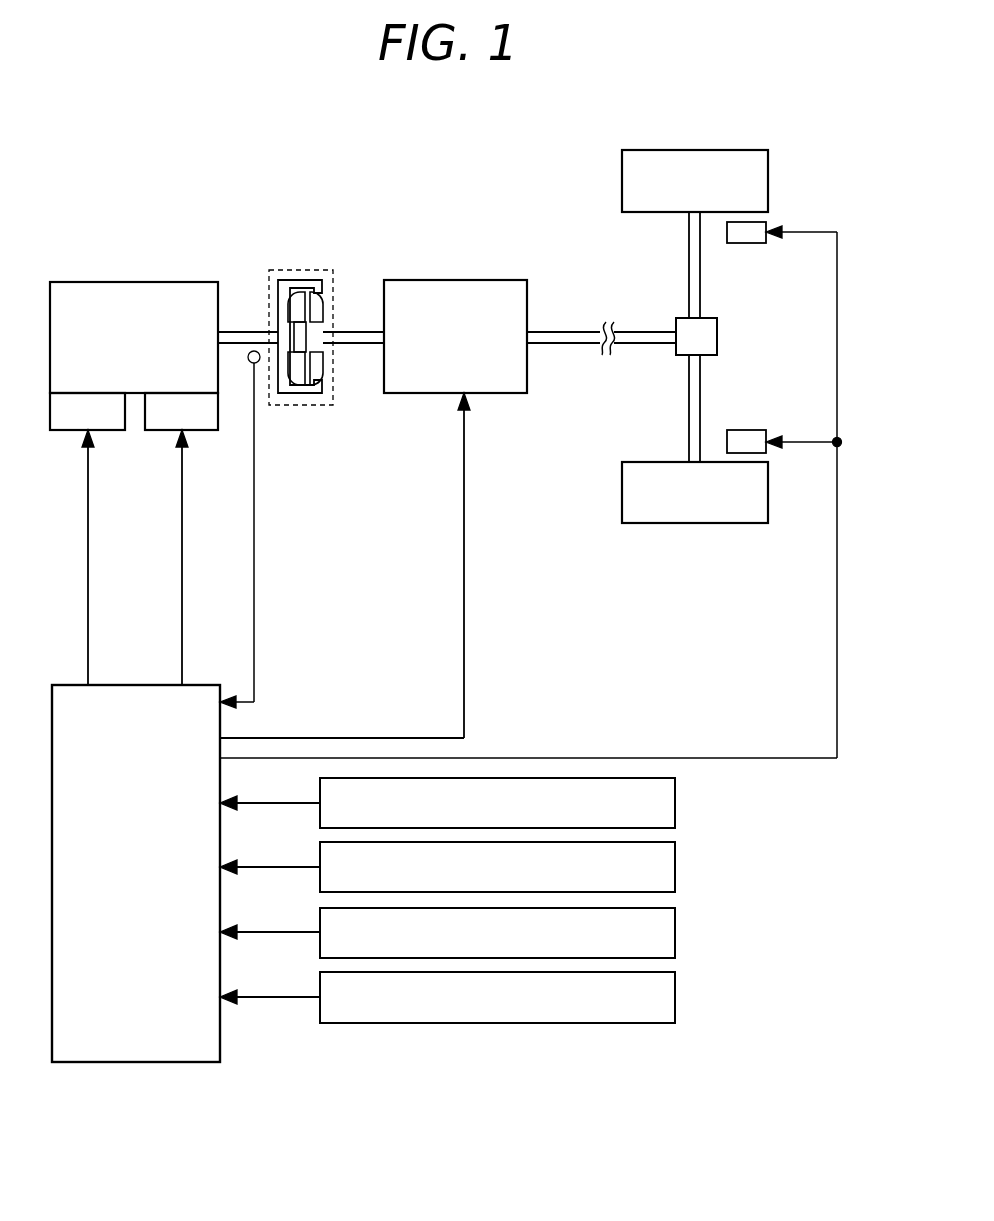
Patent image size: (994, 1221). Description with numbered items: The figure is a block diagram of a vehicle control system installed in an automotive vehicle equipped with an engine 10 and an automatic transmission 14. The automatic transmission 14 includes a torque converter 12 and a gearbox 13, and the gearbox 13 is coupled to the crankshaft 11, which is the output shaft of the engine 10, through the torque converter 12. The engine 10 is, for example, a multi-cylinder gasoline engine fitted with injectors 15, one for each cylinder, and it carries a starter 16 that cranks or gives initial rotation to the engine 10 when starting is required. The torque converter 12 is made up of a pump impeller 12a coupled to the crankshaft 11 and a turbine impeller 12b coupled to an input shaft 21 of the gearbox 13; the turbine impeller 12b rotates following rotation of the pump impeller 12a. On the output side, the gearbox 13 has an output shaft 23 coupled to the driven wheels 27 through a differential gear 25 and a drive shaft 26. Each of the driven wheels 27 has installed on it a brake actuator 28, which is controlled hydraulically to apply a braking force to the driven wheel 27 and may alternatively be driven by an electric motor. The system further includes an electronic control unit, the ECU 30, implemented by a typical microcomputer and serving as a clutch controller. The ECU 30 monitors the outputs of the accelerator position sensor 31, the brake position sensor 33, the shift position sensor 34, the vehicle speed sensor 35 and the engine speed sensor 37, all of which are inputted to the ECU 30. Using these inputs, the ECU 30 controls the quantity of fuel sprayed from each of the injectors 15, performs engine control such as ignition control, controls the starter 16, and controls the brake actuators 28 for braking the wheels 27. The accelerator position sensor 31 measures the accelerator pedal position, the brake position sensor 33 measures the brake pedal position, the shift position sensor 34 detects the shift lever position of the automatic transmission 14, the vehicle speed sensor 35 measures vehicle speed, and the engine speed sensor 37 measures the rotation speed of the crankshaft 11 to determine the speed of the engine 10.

The engine 10 is at (208, 278).
The crankshaft 11 is at (243, 330).
The torque converter 12 is at (308, 344).
The pump impeller 12a is at (322, 387).
The turbine impeller 12b is at (296, 395).
The gearbox 13 is at (402, 280).
The automatic transmission 14 is at (408, 209).
The injectors 15 is at (108, 433).
The starter 16 is at (203, 433).
The input shaft 21 is at (352, 330).
The output shaft 23 is at (562, 330).
The differential gear 25 is at (702, 375).
The drive shaft 26 is at (712, 337).
The driven wheels 27 is at (630, 150).
The brake actuator 28 is at (748, 244).
The electronic control unit (ECU) 30 is at (205, 685).
The accelerator position sensor 31 is at (677, 801).
The brake position sensor 33 is at (677, 865).
The shift position sensor 34 is at (677, 930).
The vehicle speed sensor 35 is at (677, 995).
The engine speed sensor 37 is at (251, 364).